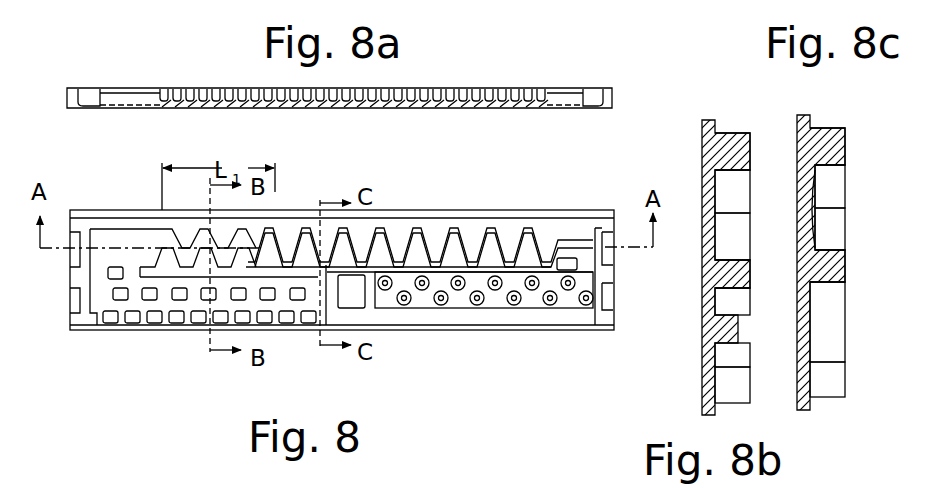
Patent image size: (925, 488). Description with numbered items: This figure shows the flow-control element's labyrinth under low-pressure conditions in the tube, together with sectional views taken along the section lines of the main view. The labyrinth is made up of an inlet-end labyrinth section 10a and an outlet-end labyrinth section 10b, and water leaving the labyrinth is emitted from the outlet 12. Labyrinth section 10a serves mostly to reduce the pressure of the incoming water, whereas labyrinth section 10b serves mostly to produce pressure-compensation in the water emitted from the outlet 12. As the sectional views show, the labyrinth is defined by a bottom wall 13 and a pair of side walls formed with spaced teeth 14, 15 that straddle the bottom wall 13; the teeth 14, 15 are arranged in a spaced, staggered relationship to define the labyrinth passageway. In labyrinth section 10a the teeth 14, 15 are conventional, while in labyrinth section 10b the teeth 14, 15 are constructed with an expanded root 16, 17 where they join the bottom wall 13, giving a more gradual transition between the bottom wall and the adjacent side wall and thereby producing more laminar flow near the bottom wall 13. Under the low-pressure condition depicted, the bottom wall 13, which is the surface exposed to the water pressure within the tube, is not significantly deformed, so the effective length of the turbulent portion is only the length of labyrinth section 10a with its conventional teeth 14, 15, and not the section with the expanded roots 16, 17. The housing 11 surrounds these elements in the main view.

In FIG. 8, the labyrinth section 10a is at (250, 234).
In FIG. 8, the labyrinth section 10b is at (421, 237).
In FIG. 8, the housing 11 is at (165, 332).
In FIG. 8, the outlet 12 is at (497, 306).
In FIG. 8b, the bottom wall 13 is at (701, 197).
In FIG. 8b, the teeth 14 is at (749, 148).
In FIG. 8c, the teeth 14 is at (846, 144).
In FIG. 8b, the teeth 15 is at (745, 275).
In FIG. 8c, the teeth 15 is at (838, 267).
In FIG. 8c, the expanded root 16 is at (817, 187).
In FIG. 8c, the expanded root 17 is at (817, 226).